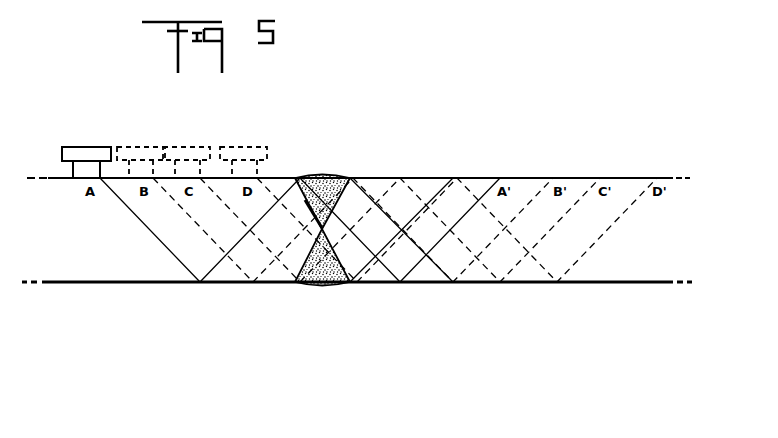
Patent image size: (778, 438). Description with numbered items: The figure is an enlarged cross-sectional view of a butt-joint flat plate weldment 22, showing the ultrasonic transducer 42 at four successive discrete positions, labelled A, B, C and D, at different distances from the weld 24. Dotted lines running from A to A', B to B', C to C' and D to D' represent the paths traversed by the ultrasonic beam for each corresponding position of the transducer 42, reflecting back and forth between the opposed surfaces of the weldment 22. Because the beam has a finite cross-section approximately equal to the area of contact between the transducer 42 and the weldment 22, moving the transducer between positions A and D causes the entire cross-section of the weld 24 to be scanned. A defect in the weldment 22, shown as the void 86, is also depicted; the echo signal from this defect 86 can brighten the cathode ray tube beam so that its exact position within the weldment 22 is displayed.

The flat plate weldment 22 is at (93, 263).
The weld 24 is at (325, 177).
The ultrasonic transducer 42 is at (76, 153).
The void 86 is at (310, 212).